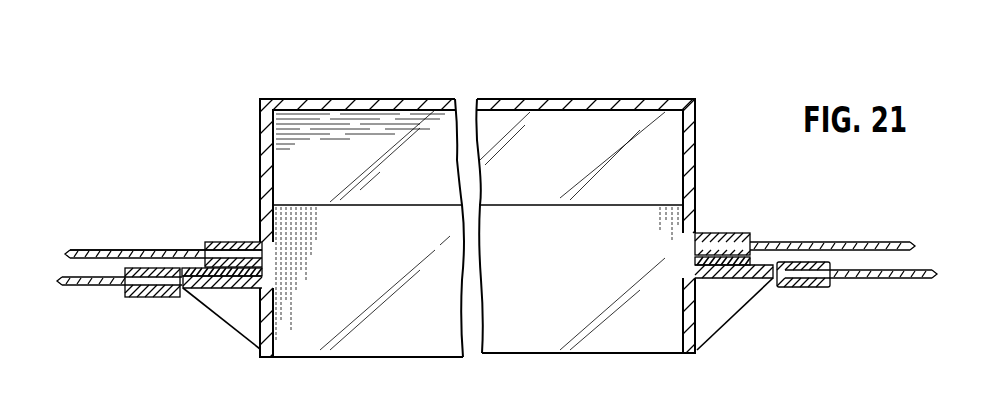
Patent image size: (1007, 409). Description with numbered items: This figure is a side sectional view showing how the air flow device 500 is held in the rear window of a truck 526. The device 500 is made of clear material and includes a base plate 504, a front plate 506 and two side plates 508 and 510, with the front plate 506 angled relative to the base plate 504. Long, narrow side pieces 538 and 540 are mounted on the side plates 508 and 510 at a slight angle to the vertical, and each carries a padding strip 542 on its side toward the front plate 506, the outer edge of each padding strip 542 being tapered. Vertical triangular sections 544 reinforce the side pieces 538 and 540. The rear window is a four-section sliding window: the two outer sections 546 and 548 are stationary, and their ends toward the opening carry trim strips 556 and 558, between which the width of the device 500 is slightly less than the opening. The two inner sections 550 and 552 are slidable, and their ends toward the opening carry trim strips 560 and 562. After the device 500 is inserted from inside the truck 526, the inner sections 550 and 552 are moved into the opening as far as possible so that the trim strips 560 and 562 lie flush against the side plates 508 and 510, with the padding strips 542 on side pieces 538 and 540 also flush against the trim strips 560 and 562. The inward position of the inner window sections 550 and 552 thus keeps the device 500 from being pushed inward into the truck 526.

The air flow device 500 is at (604, 99).
The base plate 504 is at (633, 322).
The front plate 506 is at (402, 105).
The side plate 508 is at (262, 178).
The side plate 510 is at (697, 172).
The truck 526 is at (150, 248).
The side piece 538 is at (210, 290).
The side piece 540 is at (758, 272).
The padding strip 542 is at (193, 250).
The vertical triangular section 544 is at (246, 320).
The outer window section 546 is at (112, 290).
The outer window section 548 is at (878, 279).
The inner window section 550 is at (94, 248).
The inner window section 552 is at (855, 242).
The trim strip 556 is at (155, 298).
The trim strip 558 is at (808, 288).
The trim strip 560 is at (228, 240).
The trim strip 562 is at (722, 233).